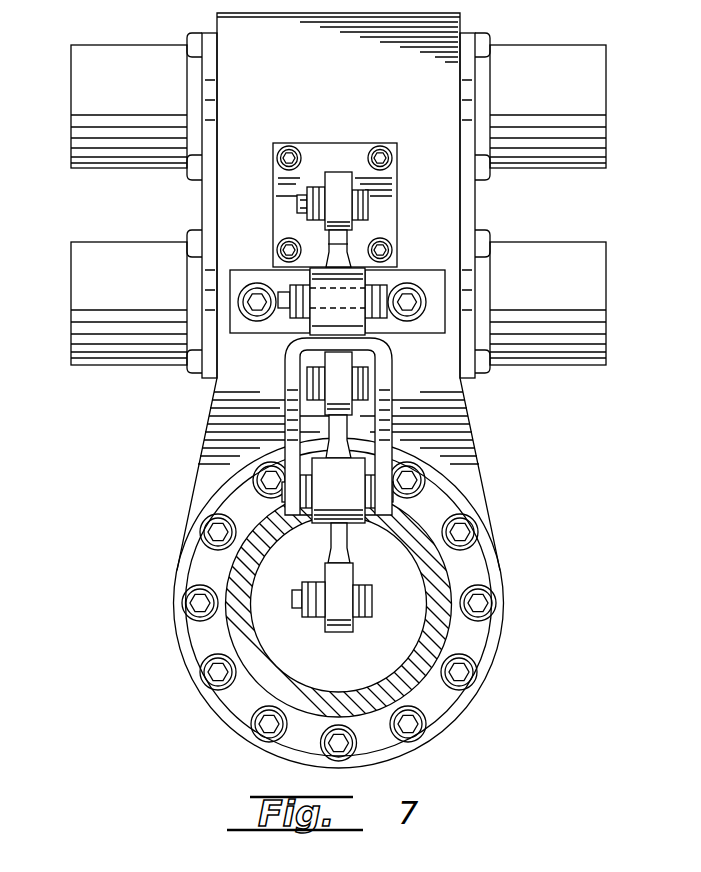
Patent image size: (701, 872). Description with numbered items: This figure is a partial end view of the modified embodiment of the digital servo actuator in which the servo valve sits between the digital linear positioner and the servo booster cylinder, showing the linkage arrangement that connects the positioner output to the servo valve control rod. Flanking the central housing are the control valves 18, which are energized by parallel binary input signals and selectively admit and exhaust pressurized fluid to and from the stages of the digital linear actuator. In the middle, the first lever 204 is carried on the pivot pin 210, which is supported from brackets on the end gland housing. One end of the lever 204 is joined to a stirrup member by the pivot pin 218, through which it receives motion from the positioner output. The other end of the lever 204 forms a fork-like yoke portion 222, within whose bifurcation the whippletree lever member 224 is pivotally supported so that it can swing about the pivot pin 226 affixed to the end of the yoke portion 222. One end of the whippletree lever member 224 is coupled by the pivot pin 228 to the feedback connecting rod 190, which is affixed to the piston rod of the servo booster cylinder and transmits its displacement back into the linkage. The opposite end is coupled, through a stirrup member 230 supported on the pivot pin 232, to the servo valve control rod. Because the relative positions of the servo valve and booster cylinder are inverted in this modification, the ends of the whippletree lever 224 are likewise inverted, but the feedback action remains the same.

The control valves 18 is at (80, 265).
The connecting rod 190 is at (360, 617).
The first lever 204 is at (337, 250).
The pivot pin 210 is at (280, 312).
The pivot pin 218 is at (297, 202).
The yoke portion 222 is at (383, 407).
The whippletree lever member 224 is at (337, 543).
The pivot pin 226 is at (268, 498).
The pivot pin 228 is at (300, 598).
The stirrup member 230 is at (360, 375).
The pivot pin 232 is at (307, 378).